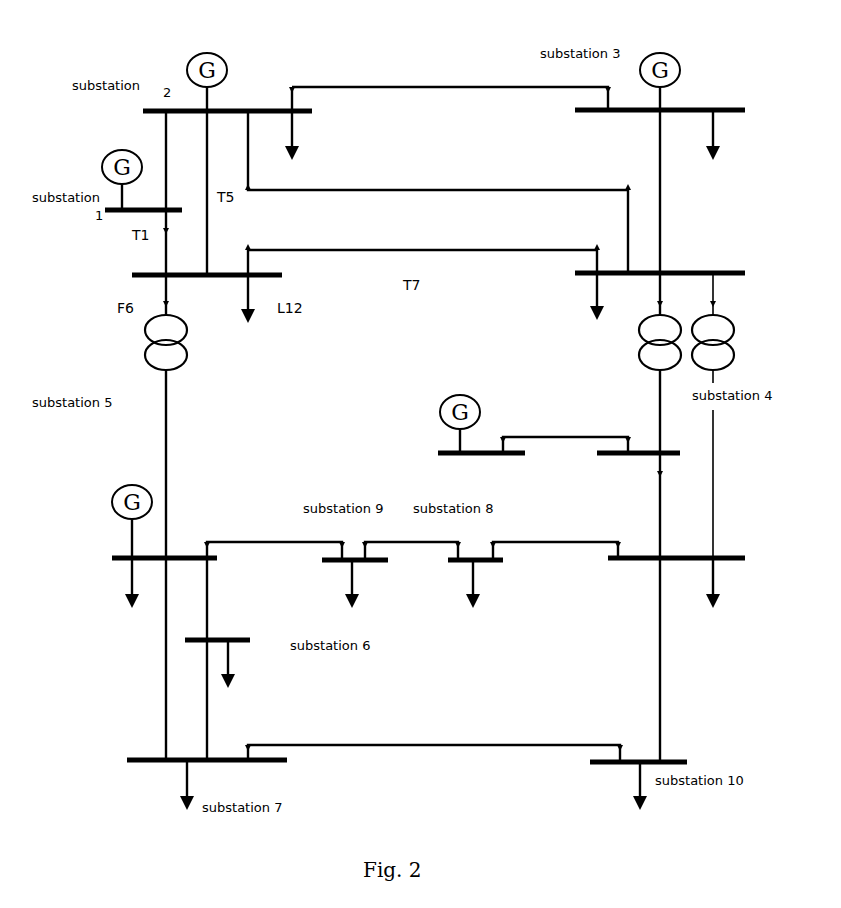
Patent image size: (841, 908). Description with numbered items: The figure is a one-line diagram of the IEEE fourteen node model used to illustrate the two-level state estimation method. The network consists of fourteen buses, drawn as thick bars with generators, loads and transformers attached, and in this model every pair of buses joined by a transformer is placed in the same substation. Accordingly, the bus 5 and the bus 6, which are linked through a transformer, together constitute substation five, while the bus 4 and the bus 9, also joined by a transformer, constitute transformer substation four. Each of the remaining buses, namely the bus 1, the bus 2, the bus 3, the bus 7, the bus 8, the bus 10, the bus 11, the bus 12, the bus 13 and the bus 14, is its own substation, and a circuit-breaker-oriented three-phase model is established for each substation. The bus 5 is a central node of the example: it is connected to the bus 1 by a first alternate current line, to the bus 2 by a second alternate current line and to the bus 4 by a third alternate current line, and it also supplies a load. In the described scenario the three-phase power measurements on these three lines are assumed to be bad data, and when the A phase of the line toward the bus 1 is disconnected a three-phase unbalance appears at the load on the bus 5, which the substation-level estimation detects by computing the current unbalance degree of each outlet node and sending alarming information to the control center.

The bus 1 is at (142, 199).
The bus 2 is at (241, 106).
The bus 3 is at (646, 106).
The bus 4 is at (646, 285).
The bus 5 is at (220, 286).
The bus 6 is at (178, 546).
The bus 7 is at (628, 452).
The bus 8 is at (466, 430).
The bus 9 is at (671, 583).
The bus 10 is at (488, 584).
The bus 11 is at (342, 584).
The bus 12 is at (234, 658).
The bus 13 is at (221, 785).
The bus 14 is at (617, 786).